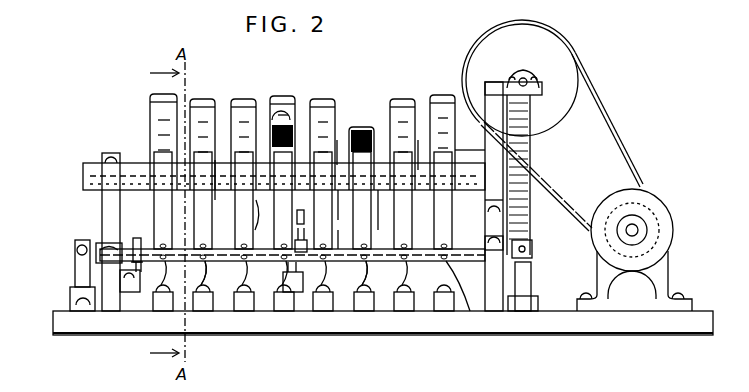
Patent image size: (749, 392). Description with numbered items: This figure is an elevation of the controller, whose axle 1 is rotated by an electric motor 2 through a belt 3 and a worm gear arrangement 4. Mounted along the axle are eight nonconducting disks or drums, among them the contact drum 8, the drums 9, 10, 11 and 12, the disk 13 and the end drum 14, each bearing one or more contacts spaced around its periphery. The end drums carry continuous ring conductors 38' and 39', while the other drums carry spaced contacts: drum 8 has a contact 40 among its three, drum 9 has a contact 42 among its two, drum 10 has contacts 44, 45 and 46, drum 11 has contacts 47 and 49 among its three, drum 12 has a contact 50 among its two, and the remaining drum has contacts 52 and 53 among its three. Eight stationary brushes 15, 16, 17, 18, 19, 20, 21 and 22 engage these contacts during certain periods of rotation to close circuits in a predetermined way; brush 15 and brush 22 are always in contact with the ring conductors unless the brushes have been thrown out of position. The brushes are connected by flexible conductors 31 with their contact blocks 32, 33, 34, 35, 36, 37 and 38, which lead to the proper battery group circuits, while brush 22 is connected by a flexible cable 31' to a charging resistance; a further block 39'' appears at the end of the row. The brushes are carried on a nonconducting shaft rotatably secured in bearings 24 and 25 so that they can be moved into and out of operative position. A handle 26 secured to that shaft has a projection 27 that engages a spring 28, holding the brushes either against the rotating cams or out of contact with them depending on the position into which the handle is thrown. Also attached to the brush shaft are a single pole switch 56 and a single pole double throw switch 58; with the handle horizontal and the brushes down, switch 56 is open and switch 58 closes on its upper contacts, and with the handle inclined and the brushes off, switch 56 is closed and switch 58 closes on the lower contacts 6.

The axle 1 is at (138, 163).
The electric motor 2 is at (674, 228).
The belt 3 is at (622, 139).
The worm gear arrangement 4 is at (528, 77).
The lower contacts 6 is at (533, 275).
The contact drum 8 is at (217, 168).
The drum 9 is at (259, 215).
The drum 10 is at (294, 136).
The drum 11 is at (337, 168).
The drum 12 is at (370, 126).
The disk 13 is at (416, 172).
The end drum 14 is at (455, 150).
The brush 15 is at (163, 200).
The brush 16 is at (203, 200).
The brush 17 is at (244, 200).
The brush 18 is at (283, 200).
The brush 19 is at (323, 200).
The brush 20 is at (362, 200).
The brush 21 is at (403, 200).
The brush 22 is at (443, 200).
The bearing 24 is at (102, 246).
The bearing 25 is at (490, 240).
The handle 26 is at (74, 249).
The projection 27 is at (75, 283).
The spring 28 is at (70, 298).
The flexible conductors 31 is at (215, 274).
The flexible cable 31' is at (395, 275).
The contact block 32 is at (162, 305).
The contact block 33 is at (203, 305).
The contact block 34 is at (244, 305).
The contact block 35 is at (284, 305).
The contact block 36 is at (323, 305).
The contact block 37 is at (364, 305).
The contact block 38 is at (401, 296).
The continuous ring conductor 38' is at (147, 140).
The continuous ring conductor 39' is at (442, 133).
The cam block 39'' is at (447, 296).
The contact 40 is at (203, 99).
The contact 42 is at (244, 99).
The contact 44 is at (303, 210).
The contact 45 is at (302, 235).
The contact 46 is at (283, 96).
The contact 47 is at (323, 99).
The contact 49 is at (344, 235).
The contact 50 is at (345, 205).
The contact 52 is at (385, 210).
The contact 53 is at (403, 99).
The single pole switch 56 is at (137, 240).
The single pole double throw switch 58 is at (533, 248).